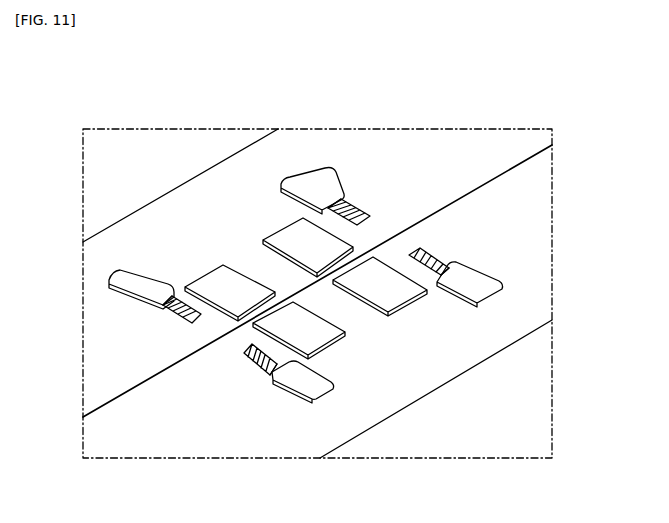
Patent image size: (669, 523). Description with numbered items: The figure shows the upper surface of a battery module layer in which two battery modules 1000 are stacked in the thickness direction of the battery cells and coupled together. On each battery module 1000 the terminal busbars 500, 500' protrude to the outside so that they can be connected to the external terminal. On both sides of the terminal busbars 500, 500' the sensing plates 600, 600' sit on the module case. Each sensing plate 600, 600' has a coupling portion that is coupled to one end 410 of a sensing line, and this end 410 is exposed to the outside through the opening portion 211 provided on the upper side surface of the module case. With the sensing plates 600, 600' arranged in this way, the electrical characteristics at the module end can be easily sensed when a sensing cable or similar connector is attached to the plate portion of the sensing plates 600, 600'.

The battery module 1000 is at (452, 153).
The terminal busbar 500 is at (283, 295).
The terminal busbar 500' is at (351, 295).
The sensing plate 600 is at (185, 385).
The sensing plate 600' is at (442, 198).
The opening portion 211 is at (170, 314).
The one end of the sensing line 410 is at (180, 332).